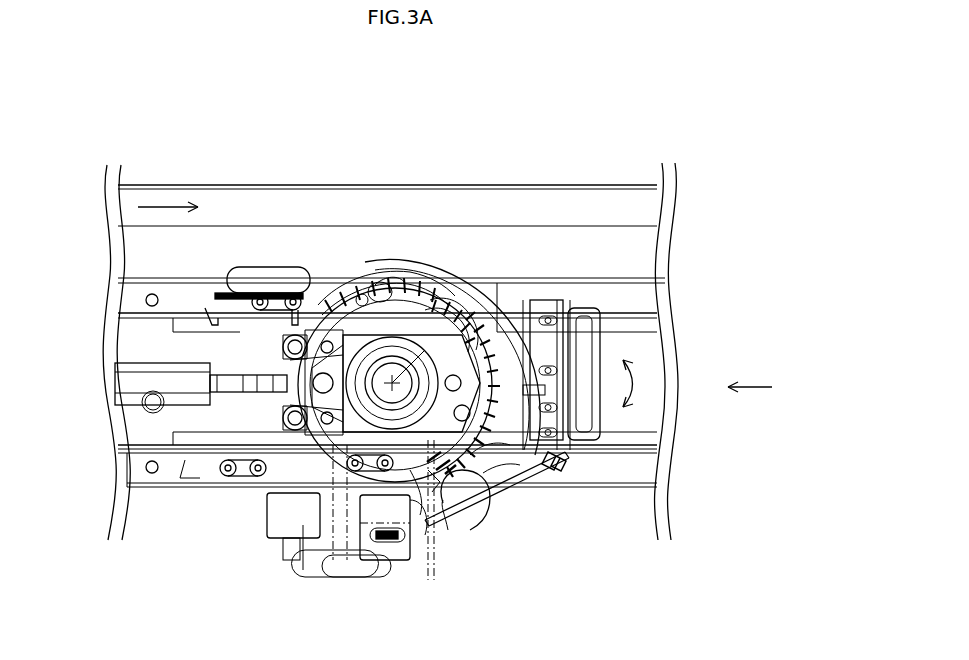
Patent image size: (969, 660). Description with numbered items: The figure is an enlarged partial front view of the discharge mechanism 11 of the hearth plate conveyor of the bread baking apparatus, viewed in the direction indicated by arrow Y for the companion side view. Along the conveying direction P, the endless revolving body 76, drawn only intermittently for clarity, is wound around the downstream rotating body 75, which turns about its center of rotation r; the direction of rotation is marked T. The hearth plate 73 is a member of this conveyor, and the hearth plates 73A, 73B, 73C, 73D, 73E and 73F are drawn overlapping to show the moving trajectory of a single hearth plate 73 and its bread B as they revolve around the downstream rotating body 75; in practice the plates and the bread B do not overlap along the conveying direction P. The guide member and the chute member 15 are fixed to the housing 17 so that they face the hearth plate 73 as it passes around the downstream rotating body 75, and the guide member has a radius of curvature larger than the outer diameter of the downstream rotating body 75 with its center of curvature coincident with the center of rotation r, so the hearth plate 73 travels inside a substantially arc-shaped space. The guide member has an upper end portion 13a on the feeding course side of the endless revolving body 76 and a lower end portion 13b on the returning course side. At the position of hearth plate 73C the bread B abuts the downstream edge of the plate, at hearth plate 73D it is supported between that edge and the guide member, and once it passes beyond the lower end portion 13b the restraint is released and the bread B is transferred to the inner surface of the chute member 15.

The discharge mechanism 11 is at (530, 263).
The conveying direction P is at (178, 207).
The arrow Y is at (758, 387).
The rotation direction T is at (633, 385).
The bread B is at (273, 267).
The hearth plate 73 is at (308, 292).
The hearth plate 73A is at (378, 268).
The hearth plate 73B is at (395, 262).
The hearth plate 73C is at (422, 268).
The hearth plate 73D is at (560, 468).
The hearth plate 73E is at (483, 512).
The hearth plate 73F is at (428, 495).
The upper end portion 13a is at (462, 275).
The lower end portion 13b is at (500, 490).
The chute member 15 is at (450, 490).
The housing 17 is at (585, 493).
The downstream rotating body 75 is at (268, 482).
The endless revolving body 76 is at (233, 483).
The center of rotation r is at (390, 548).